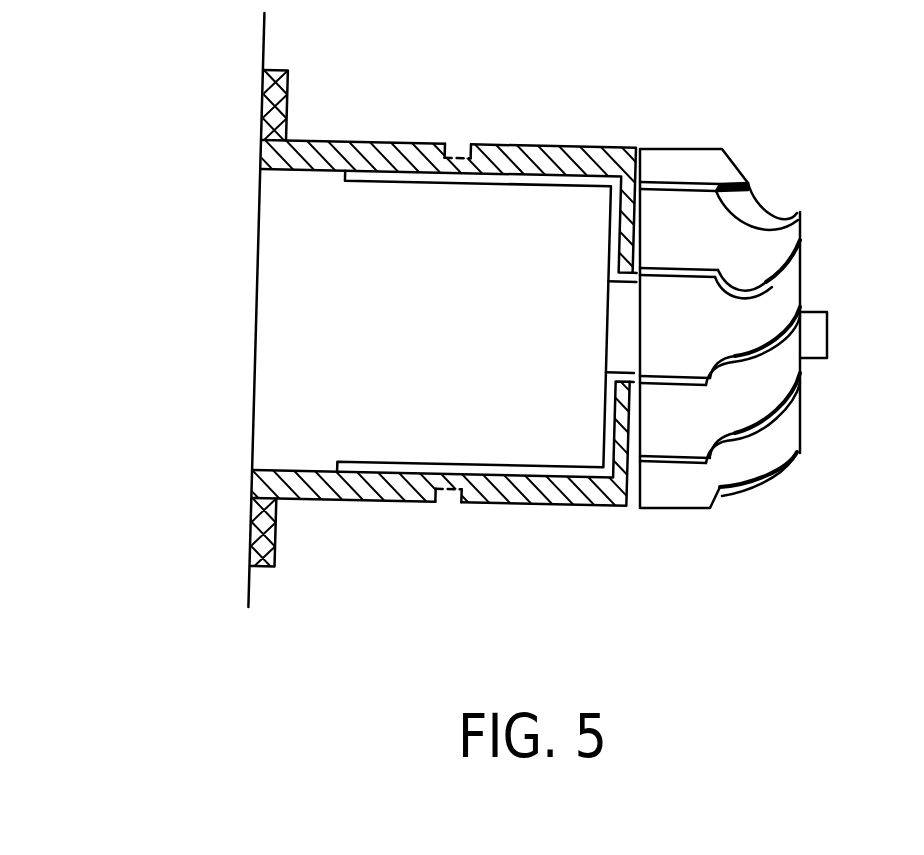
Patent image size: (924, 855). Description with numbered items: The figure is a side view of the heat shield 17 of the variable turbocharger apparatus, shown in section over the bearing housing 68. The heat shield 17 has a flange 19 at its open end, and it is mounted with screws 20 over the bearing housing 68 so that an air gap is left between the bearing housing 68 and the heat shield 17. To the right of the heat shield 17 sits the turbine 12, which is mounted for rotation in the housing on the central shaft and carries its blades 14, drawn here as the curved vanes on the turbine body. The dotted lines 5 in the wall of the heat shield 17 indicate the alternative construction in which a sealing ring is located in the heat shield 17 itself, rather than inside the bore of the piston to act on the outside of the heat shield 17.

The dotted lines 5 is at (458, 148).
The turbine 12 is at (752, 308).
The blades 14 is at (705, 185).
The heat shield 17 is at (533, 143).
The flange 19 is at (287, 72).
The screws 20 is at (273, 100).
The bearing housing 68 is at (312, 362).